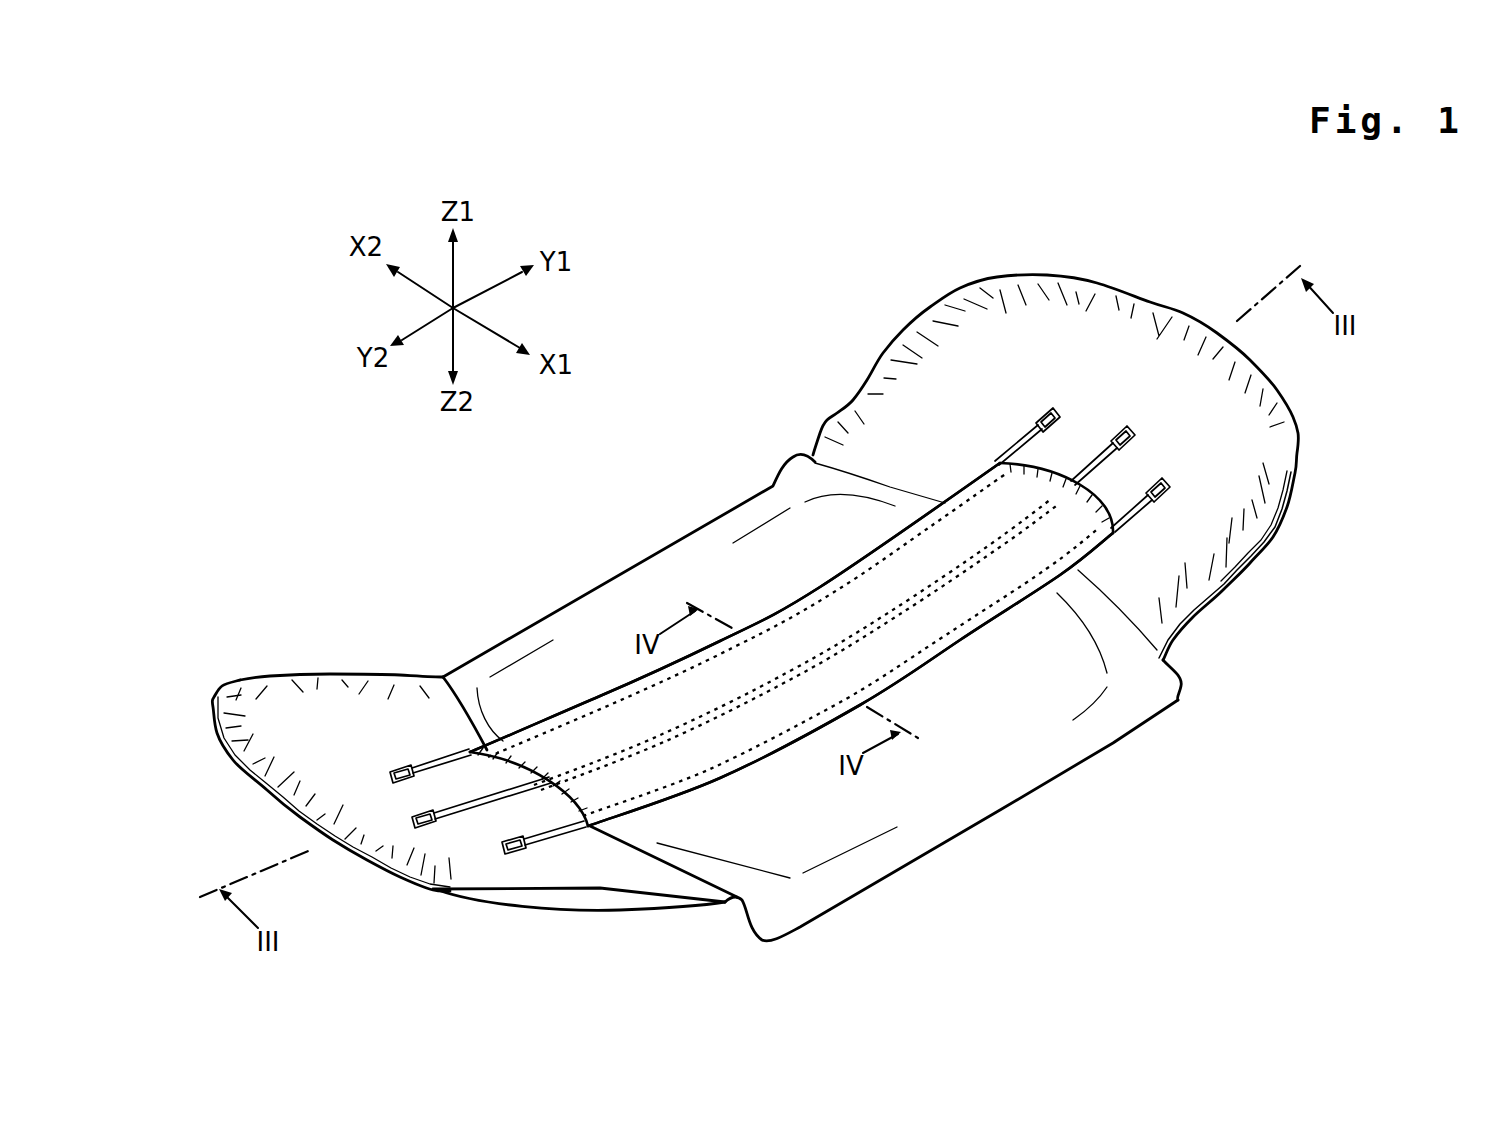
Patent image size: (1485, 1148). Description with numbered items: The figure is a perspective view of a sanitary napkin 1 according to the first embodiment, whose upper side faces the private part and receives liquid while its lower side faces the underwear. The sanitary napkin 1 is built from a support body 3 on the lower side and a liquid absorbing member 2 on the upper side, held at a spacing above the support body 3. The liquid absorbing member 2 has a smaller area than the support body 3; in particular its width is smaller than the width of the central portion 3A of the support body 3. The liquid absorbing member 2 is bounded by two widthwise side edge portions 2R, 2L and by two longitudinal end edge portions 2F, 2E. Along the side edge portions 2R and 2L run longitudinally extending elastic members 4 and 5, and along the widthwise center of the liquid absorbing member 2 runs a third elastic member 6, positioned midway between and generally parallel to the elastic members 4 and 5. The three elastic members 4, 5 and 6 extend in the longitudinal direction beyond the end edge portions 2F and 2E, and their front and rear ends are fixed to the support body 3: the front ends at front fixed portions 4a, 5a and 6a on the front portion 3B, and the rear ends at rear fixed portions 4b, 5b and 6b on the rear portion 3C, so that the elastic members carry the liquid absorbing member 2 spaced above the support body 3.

The sanitary napkin 1 is at (711, 421).
The liquid absorbing member 2 is at (933, 647).
The end edge portion 2E is at (553, 787).
The end edge portion 2F is at (1090, 500).
The side edge portion 2L is at (617, 693).
The side edge portion 2R is at (760, 755).
The support body 3 is at (1110, 747).
The central portion 3A is at (680, 567).
The front portion 3B is at (1073, 332).
The rear portion 3C is at (283, 717).
The elastic member 4 is at (1140, 510).
The front fixed portion 4a is at (1170, 490).
The rear fixed portion 4b is at (533, 847).
The elastic member 5 is at (1013, 450).
The front fixed portion 5a is at (1043, 420).
The rear fixed portion 5b is at (400, 770).
The elastic member 6 is at (1093, 463).
The front fixed portion 6a is at (1128, 432).
The rear fixed portion 6b is at (417, 813).